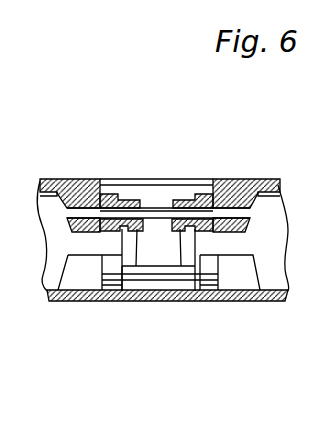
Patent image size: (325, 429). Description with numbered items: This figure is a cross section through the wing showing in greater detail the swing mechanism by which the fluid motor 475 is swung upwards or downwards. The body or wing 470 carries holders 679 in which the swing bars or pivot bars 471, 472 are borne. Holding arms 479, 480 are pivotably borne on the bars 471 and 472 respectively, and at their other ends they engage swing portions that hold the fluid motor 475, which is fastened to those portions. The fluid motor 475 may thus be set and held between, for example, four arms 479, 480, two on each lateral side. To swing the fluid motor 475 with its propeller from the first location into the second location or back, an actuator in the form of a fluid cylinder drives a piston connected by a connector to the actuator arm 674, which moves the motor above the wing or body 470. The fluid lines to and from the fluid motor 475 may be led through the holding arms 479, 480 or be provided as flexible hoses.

The body or wing 470 is at (48, 295).
The swing bar or pivot bar 471 is at (157, 205).
The swing bar or pivot bar 472 is at (196, 258).
The fluid motor 475 is at (150, 247).
The holding arm 479 is at (112, 270).
The holding arm 480 is at (113, 205).
The actuator arm 674 is at (180, 245).
The holder 679 is at (63, 189).